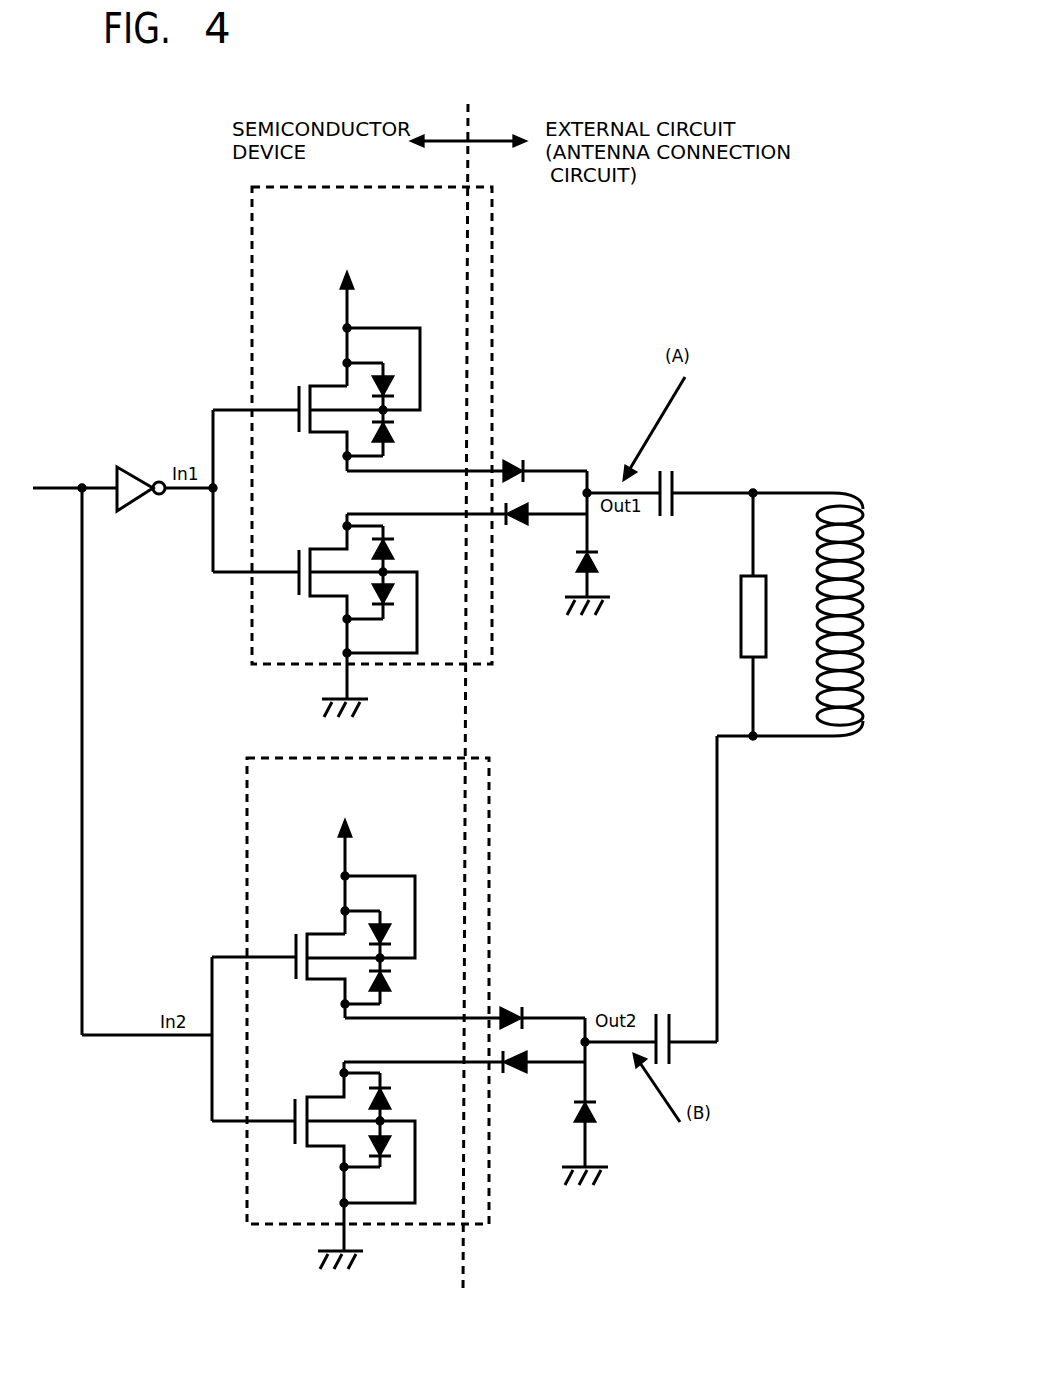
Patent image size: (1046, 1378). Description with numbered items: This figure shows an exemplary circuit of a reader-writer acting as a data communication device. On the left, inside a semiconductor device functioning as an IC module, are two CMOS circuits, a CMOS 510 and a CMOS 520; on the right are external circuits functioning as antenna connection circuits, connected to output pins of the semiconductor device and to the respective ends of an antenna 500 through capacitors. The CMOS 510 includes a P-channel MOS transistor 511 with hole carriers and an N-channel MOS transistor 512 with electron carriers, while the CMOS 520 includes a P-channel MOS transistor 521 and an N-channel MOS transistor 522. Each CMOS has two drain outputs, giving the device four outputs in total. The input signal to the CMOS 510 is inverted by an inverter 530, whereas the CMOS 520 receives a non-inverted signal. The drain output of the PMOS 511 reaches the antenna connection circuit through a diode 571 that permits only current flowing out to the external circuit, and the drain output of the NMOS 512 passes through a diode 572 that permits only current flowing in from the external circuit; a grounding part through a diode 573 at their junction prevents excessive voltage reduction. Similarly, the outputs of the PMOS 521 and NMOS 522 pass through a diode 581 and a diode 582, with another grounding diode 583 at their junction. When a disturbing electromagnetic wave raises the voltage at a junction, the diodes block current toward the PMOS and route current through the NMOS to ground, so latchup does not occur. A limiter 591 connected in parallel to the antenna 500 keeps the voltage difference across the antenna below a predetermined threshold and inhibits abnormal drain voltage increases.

The antenna 500 is at (850, 494).
The CMOS 510 is at (492, 320).
The P-channel MOS transistor (PMOS) 511 is at (312, 363).
The N-channel MOS transistor (NMOS) 512 is at (312, 538).
The CMOS 520 is at (489, 852).
The P-channel MOS transistor (PMOS) 521 is at (317, 908).
The N-channel MOS transistor (NMOS) 522 is at (310, 1085).
The inverter 530 is at (135, 470).
The diode 571 is at (528, 447).
The diode 572 is at (528, 540).
The diode 573 is at (610, 578).
The diode 581 is at (525, 992).
The diode 582 is at (525, 1087).
The diode 583 is at (610, 1122).
The limiter 591 is at (740, 600).